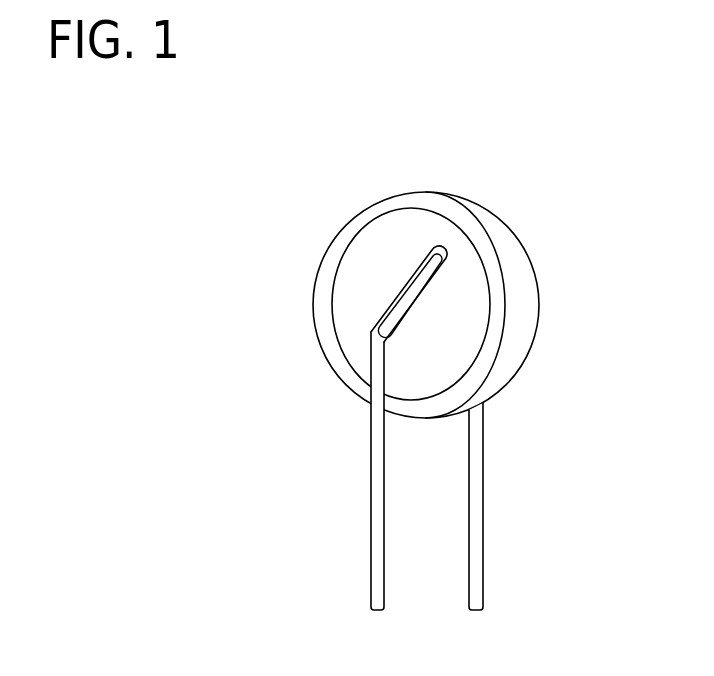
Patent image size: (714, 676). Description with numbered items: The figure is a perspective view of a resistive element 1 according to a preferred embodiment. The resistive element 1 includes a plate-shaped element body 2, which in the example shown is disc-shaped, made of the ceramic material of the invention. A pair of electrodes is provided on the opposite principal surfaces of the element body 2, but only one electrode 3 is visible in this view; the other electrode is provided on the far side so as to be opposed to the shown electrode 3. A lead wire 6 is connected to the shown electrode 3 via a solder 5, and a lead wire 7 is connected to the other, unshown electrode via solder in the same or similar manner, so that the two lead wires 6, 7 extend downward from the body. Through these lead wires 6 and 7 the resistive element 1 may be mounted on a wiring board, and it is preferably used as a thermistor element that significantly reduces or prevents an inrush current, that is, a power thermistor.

The resistive element 1 is at (241, 173).
The element body 2 is at (515, 253).
The electrode 3 is at (358, 275).
The solder 5 is at (407, 267).
The lead wire 6 is at (368, 469).
The lead wire 7 is at (484, 500).